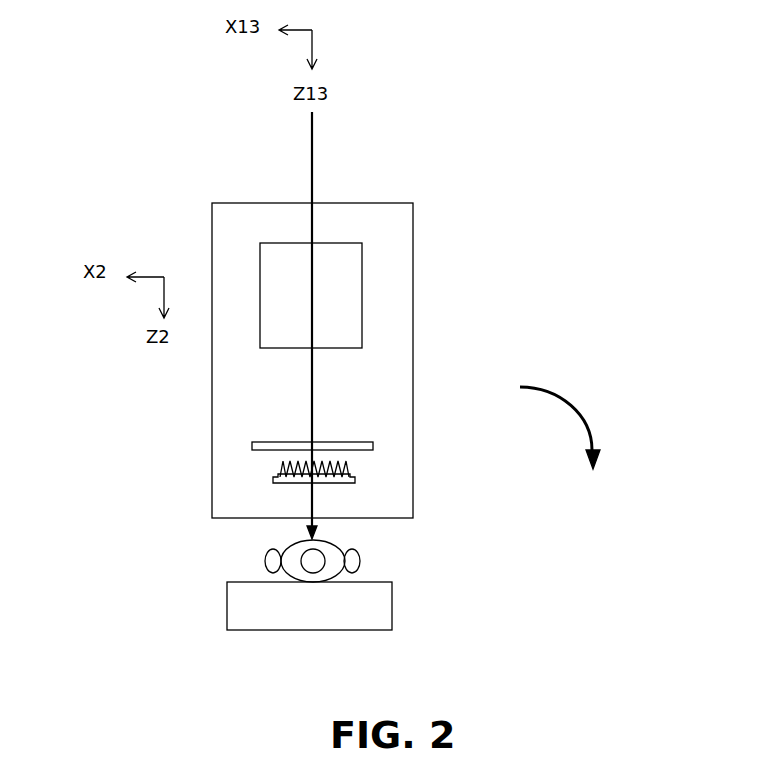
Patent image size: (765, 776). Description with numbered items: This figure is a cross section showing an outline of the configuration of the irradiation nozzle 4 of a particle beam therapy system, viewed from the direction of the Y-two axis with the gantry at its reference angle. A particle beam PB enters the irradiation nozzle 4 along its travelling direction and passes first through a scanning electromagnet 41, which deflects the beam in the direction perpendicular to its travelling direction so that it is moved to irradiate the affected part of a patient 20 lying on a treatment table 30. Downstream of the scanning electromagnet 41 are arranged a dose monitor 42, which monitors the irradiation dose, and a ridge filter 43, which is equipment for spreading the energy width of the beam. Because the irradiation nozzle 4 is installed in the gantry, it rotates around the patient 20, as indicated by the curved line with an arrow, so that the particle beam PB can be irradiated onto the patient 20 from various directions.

The irradiation nozzle 4 is at (278, 202).
The particle beam PB is at (313, 133).
The scanning electromagnet 41 is at (362, 282).
The dose monitor 42 is at (373, 448).
The ridge filter 43 is at (360, 476).
The patient 20 is at (260, 559).
The treatment table 30 is at (228, 605).